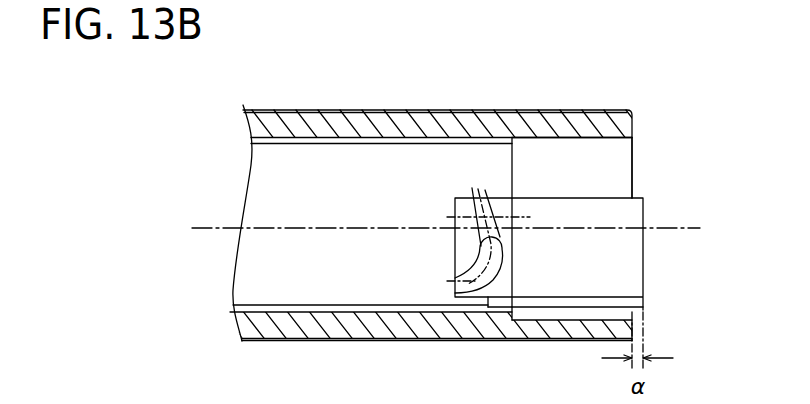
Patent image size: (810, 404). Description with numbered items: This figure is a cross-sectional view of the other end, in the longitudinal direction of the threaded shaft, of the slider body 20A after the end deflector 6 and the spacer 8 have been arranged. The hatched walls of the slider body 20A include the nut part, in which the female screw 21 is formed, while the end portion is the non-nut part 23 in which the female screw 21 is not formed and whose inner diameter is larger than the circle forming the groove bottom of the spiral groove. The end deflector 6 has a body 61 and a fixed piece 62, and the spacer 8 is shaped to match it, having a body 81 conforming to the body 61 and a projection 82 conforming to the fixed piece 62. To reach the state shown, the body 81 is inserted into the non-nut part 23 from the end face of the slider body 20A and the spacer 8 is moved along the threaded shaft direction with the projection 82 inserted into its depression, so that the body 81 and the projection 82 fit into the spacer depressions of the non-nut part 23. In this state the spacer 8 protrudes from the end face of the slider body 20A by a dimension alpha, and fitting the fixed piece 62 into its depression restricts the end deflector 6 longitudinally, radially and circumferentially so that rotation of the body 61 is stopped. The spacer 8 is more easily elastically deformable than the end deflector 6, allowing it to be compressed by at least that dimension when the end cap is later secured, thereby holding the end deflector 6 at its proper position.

The slider body 20A is at (291, 107).
The female screw 21 is at (355, 312).
The non-nut part 23 is at (618, 158).
The spacer 8 is at (553, 273).
The body 81 is at (627, 267).
The projection 82 is at (553, 303).
The end deflector 6 is at (454, 254).
The body 61 is at (484, 294).
The fixed piece 62 is at (502, 303).